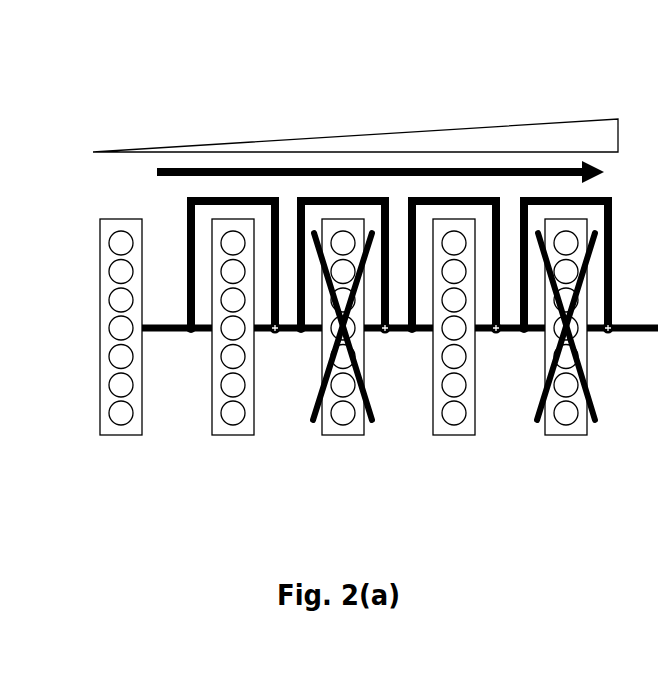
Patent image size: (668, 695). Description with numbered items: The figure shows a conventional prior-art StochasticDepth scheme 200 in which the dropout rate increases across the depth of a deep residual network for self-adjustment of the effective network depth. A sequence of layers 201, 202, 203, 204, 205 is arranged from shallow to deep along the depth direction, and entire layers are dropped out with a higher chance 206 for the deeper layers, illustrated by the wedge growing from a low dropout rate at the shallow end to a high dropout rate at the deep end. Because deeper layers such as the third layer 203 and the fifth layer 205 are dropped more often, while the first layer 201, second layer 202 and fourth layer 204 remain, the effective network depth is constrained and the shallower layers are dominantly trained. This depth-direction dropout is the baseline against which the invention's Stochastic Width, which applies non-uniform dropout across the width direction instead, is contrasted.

The neural network architecture with progressive dropout 200 is at (78, 38).
The first layer 201 is at (122, 440).
The second layer 202 is at (217, 440).
The third layer (dropped out) 203 is at (338, 440).
The fourth layer 204 is at (455, 440).
The fifth layer (dropped out) 205 is at (568, 440).
The higher dropout chance for deeper layers 206 is at (497, 117).